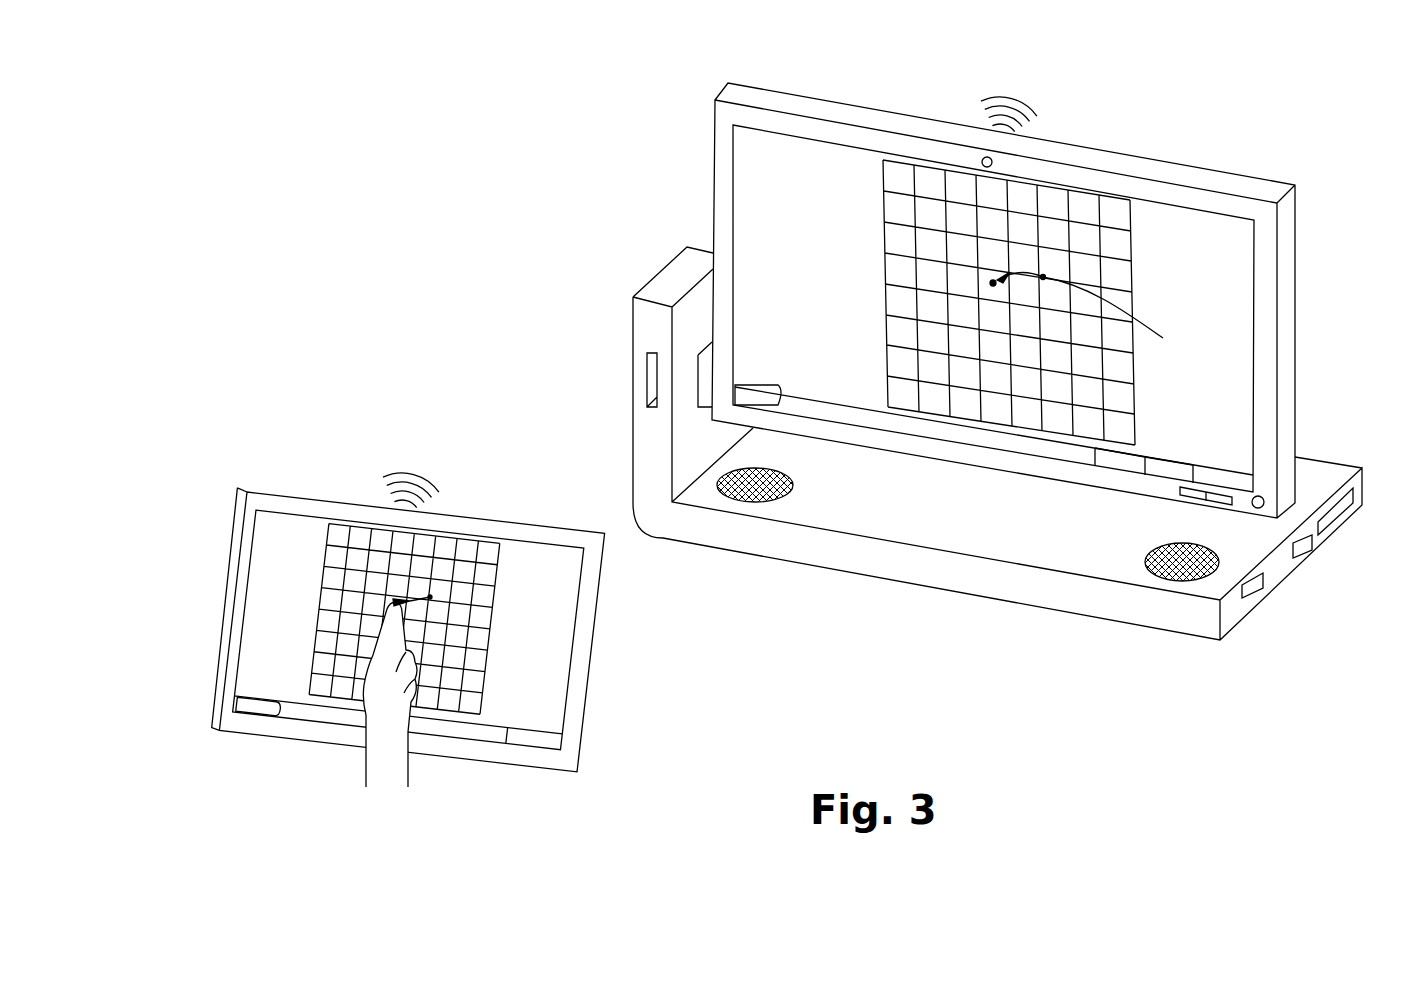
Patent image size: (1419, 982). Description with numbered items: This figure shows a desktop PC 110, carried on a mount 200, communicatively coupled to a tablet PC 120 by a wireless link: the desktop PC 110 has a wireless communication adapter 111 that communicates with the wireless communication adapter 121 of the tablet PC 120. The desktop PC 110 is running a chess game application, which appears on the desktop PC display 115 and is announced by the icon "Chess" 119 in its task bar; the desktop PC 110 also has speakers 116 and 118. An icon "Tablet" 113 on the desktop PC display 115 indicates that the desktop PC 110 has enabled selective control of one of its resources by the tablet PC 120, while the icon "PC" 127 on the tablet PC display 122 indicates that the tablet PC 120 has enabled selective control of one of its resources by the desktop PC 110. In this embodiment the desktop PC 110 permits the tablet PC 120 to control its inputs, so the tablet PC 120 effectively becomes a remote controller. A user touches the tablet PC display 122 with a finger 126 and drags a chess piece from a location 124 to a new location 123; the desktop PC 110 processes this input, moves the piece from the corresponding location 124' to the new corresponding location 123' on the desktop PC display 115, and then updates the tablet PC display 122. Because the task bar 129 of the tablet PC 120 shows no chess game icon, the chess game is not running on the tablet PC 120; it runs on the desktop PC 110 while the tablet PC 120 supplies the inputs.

The desktop PC 110 is at (852, 105).
The wireless communication adapter 111 is at (1020, 97).
The icon "Tablet" 113 is at (1170, 473).
The desktop PC display 115 is at (1158, 213).
The desktop PC speaker 116 is at (743, 503).
The desktop PC speaker 118 is at (1162, 588).
The icon "Chess" 119 is at (1117, 468).
The tablet PC 120 is at (328, 490).
The wireless communication adapter 121 is at (423, 470).
The tablet PC display 122 is at (467, 727).
The new location 123 is at (333, 584).
The new corresponding location 123' is at (896, 282).
The location 124 is at (482, 633).
The corresponding location 124' is at (1109, 327).
The finger 126 is at (380, 688).
The icon "PC" 127 is at (543, 750).
The task bar 129 is at (252, 713).
The mount 200 is at (678, 277).